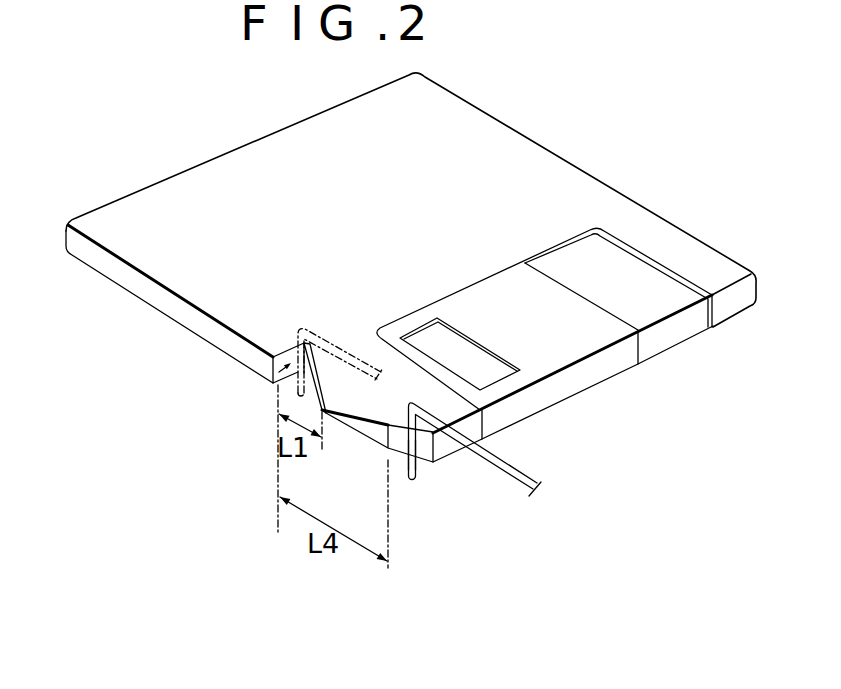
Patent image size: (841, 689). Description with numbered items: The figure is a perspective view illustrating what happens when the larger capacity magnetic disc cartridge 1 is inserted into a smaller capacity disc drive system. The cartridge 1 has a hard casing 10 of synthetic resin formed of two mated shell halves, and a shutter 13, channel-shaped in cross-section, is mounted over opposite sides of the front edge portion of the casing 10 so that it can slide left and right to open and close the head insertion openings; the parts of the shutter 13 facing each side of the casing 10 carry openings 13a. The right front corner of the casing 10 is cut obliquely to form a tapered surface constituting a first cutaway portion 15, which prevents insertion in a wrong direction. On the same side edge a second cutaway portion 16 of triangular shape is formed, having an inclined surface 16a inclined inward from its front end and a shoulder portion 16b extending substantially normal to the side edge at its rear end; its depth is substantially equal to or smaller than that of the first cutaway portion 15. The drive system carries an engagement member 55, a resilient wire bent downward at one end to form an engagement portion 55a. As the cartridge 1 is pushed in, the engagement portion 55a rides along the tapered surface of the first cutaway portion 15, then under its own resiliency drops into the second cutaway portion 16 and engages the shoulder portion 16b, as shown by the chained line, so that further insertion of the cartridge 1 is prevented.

The larger capacity magnetic disc cartridge 1 is at (606, 130).
The hard casing 10 is at (625, 208).
The shutter 13 is at (593, 377).
The opening 13a is at (487, 380).
The first cutaway portion 15 is at (400, 451).
The second cutaway portion 16 is at (273, 372).
The inclined surface 16a is at (327, 352).
The shoulder portion 16b is at (286, 346).
The engagement member 55 is at (325, 320).
The engagement portion 55a is at (405, 480).